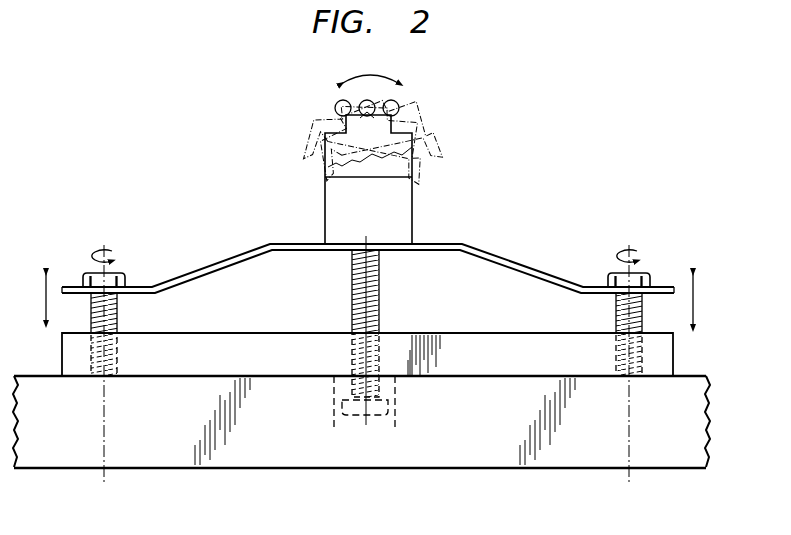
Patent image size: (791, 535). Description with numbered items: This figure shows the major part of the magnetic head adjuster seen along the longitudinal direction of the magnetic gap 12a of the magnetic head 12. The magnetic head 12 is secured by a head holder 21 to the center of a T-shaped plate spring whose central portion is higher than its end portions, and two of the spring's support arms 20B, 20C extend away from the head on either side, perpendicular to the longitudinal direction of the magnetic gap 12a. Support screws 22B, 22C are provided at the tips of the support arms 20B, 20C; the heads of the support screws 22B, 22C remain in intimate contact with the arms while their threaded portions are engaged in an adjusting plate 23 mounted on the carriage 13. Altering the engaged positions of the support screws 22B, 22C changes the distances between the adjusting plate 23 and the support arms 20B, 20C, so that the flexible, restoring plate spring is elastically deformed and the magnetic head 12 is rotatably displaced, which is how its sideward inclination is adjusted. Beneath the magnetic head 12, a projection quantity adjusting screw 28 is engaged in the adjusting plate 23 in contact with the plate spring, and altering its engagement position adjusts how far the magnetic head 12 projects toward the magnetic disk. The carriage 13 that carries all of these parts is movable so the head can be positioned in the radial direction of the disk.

The magnetic head 12 is at (376, 102).
The magnetic gap 12a is at (363, 104).
The carriage 13 is at (572, 461).
The support arm 20B is at (561, 276).
The support arm 20C is at (192, 271).
The head holder 21 is at (407, 218).
The support screw 22B is at (646, 272).
The support screw 22C is at (87, 271).
The adjusting plate 23 is at (455, 341).
The projection quantity adjusting screw 28 is at (381, 296).